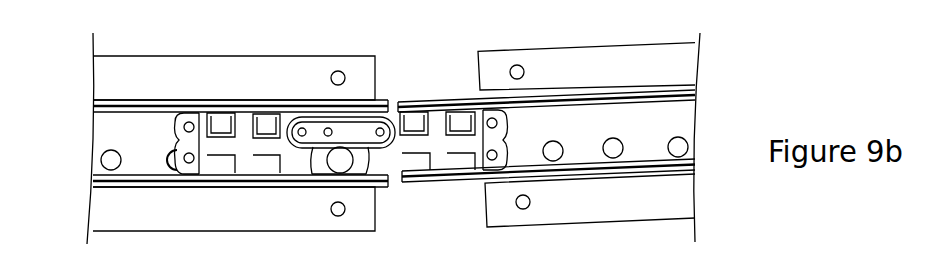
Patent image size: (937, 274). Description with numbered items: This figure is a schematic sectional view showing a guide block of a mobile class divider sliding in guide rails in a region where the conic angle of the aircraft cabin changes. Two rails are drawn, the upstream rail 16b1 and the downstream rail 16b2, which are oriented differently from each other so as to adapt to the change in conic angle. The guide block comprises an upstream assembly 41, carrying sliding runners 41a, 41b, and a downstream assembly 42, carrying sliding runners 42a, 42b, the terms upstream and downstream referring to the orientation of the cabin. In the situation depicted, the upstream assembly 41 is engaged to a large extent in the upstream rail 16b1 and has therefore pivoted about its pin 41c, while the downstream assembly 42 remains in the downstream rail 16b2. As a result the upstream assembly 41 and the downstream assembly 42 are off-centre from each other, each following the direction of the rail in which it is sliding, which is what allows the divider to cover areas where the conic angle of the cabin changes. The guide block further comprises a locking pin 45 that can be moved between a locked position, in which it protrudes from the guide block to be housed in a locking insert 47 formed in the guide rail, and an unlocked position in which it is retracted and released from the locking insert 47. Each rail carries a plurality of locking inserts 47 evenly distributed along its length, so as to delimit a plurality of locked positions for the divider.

The downstream rail 16b2 is at (147, 56).
The upstream rail 16b1 is at (622, 43).
The locking insert 47 is at (101, 161).
The downstream assembly 42 is at (234, 145).
The sliding runner 42a is at (260, 139).
The sliding runner 42b is at (222, 138).
The locking pin 45 is at (345, 100).
The pin 41c is at (381, 128).
The upstream assembly 41 is at (463, 143).
The sliding runner 41a is at (460, 131).
The sliding runner 41b is at (413, 131).